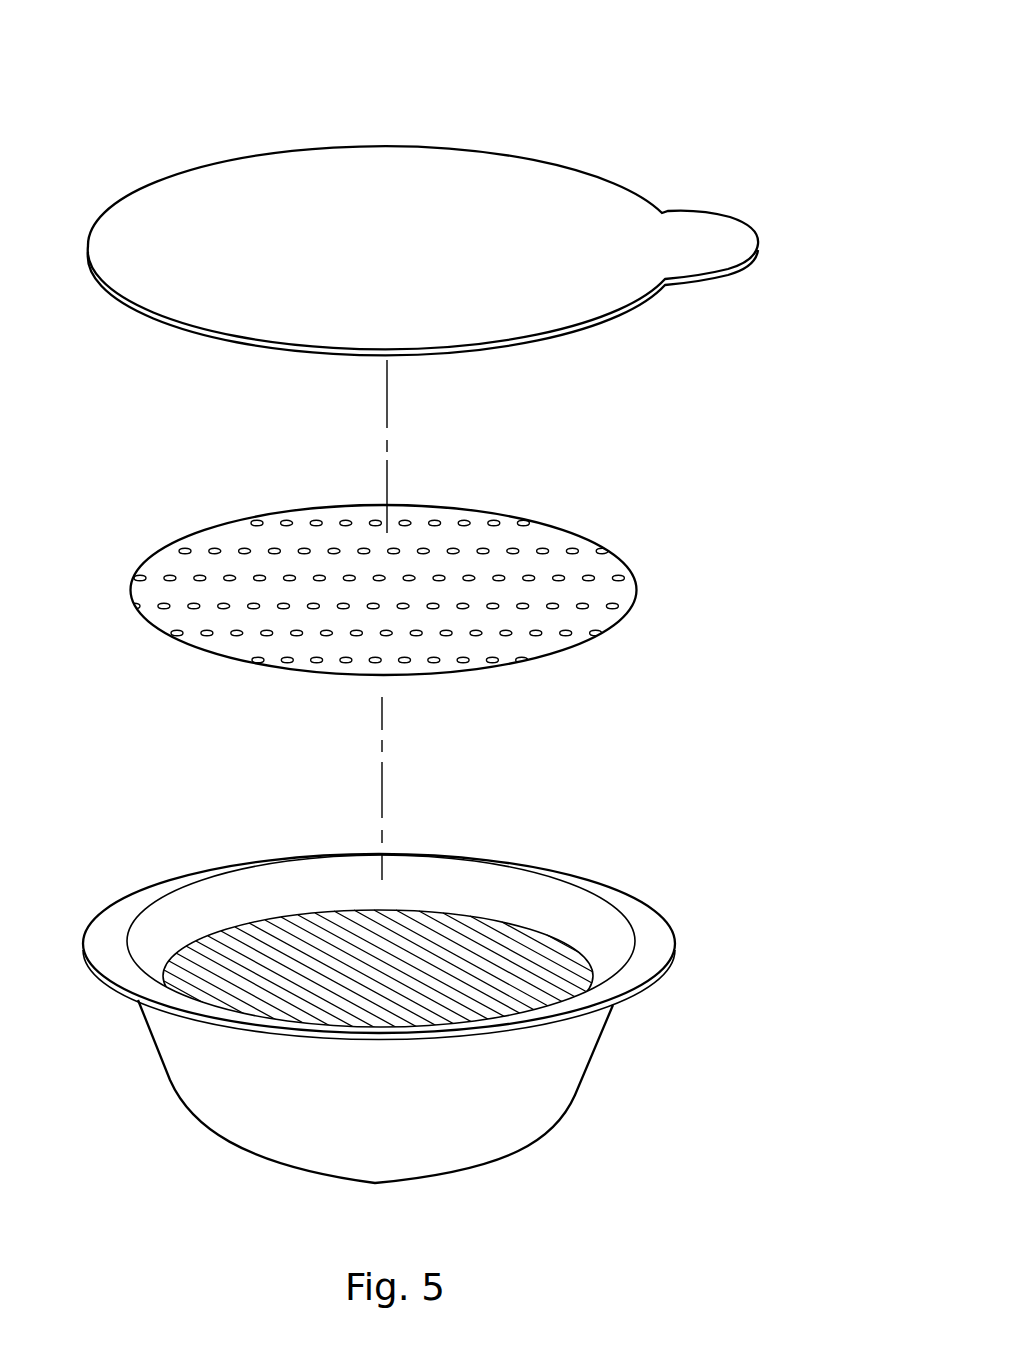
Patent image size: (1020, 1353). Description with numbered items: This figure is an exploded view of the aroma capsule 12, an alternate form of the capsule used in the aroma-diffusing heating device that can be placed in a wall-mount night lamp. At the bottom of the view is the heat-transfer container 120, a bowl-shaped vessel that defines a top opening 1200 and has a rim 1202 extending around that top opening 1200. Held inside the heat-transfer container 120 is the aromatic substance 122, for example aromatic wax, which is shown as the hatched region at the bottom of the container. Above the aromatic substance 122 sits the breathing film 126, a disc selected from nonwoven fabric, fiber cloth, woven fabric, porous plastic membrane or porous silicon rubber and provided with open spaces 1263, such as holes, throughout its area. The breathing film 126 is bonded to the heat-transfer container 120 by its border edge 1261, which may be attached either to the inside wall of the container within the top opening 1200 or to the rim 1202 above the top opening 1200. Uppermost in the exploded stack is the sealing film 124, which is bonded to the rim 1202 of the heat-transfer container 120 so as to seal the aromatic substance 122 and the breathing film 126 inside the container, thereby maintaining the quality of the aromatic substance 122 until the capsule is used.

The aroma capsule 12 is at (518, 122).
The sealing film 124 is at (227, 195).
The breathing film 126 is at (227, 537).
The border edge 1261 is at (633, 577).
The open spaces 1263 is at (437, 577).
The heat-transfer container 120 is at (537, 1105).
The top opening 1200 is at (527, 871).
The rim 1202 is at (647, 948).
The aromatic substance 122 is at (263, 984).